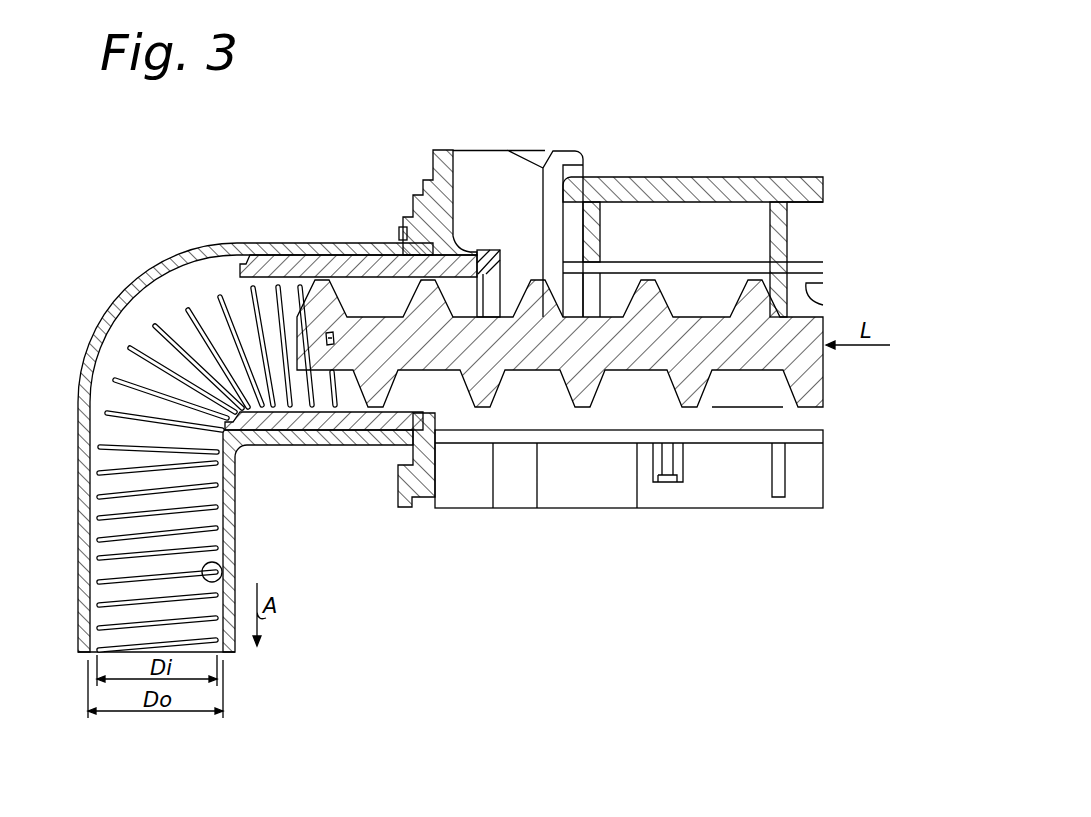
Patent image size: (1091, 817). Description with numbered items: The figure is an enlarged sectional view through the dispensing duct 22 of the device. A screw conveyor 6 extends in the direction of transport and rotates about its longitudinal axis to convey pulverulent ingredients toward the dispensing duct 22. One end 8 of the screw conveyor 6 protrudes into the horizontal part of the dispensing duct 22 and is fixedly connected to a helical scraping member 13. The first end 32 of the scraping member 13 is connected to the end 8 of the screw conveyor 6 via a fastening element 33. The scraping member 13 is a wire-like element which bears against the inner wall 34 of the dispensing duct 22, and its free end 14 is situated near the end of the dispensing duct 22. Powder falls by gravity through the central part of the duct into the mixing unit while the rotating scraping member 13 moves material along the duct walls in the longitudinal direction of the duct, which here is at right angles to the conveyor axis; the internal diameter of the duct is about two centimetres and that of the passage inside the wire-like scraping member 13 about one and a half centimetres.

The screw conveyor 6 is at (593, 347).
The end of the screw conveyor 8 is at (356, 348).
The helical scraping member 13 is at (197, 530).
The free end of the scraping member 14 is at (188, 643).
The dispensing duct 22 is at (80, 580).
The first end of the scraping element 32 is at (295, 290).
The fastening element 33 is at (323, 344).
The inner wall of the dispensing duct 34 is at (223, 577).